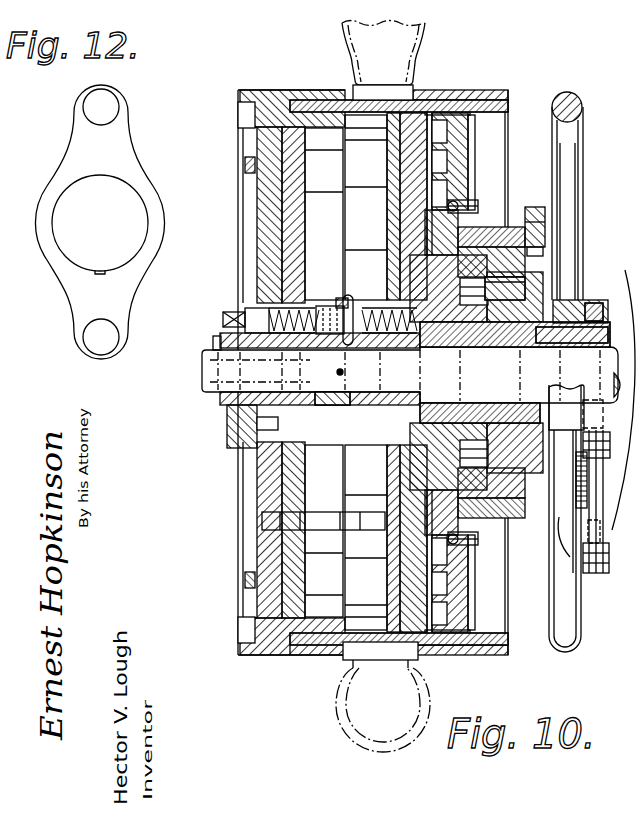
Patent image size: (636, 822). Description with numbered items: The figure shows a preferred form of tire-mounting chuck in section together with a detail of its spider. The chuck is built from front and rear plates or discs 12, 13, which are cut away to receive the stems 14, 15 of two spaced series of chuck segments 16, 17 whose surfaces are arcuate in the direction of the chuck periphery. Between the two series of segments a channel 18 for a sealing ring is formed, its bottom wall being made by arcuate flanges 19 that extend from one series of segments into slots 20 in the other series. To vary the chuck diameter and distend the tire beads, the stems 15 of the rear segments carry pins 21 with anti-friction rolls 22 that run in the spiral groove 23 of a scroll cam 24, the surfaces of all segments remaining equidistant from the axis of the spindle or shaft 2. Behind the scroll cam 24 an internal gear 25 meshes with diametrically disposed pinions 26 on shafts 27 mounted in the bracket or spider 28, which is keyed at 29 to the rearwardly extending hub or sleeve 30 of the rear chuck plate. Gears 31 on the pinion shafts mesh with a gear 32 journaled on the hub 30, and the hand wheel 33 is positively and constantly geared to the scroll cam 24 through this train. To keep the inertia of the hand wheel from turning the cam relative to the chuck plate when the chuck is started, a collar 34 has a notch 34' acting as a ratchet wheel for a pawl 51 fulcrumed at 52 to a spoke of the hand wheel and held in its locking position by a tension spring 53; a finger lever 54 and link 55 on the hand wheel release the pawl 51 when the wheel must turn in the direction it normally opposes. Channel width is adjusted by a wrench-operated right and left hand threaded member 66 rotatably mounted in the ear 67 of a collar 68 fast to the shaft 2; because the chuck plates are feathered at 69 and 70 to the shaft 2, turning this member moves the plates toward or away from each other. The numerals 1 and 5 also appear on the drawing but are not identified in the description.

In FIG. 10, the gear housing 1 is at (270, 657).
In FIG. 10, the spindle or shaft 2 is at (208, 368).
In FIG. 10, the shift lever pivot 5 is at (617, 280).
In FIG. 10, the front plate 12 is at (285, 216).
In FIG. 10, the rear plate 13 is at (393, 157).
In FIG. 10, the stems 14 is at (263, 250).
In FIG. 10, the stems 15 is at (408, 198).
In FIG. 10, the chuck segments 16 is at (240, 115).
In FIG. 10, the chuck segments 17 is at (498, 115).
In FIG. 10, the channel 18 is at (423, 92).
In FIG. 10, the arcuate flanges 19 is at (297, 653).
In FIG. 10, the slots 20 is at (305, 102).
In FIG. 10, the pins 21 is at (390, 247).
In FIG. 10, the anti-friction rolls 22 is at (443, 268).
In FIG. 10, the spiral groove 23 is at (438, 162).
In FIG. 10, the scroll cam 24 is at (455, 143).
In FIG. 10, the internal gear 25 is at (478, 210).
In FIG. 10, the pinions 26 is at (498, 222).
In FIG. 10, the shafts 27 is at (540, 230).
In FIG. 12, the bracket or spider 28 is at (128, 150).
In FIG. 10, the bracket or spider 28 is at (553, 260).
In FIG. 10, the key 29 is at (482, 402).
In FIG. 10, the hub or sleeve 30 is at (607, 332).
In FIG. 10, the gears 31 is at (533, 210).
In FIG. 10, the gear 32 is at (540, 295).
In FIG. 10, the hand wheel 33 is at (583, 108).
In FIG. 10, the collar 34 is at (610, 306).
In FIG. 10, the notch 34' is at (607, 414).
In FIG. 10, the pawl 51 is at (607, 472).
In FIG. 10, the fulcrum 52 is at (610, 445).
In FIG. 10, the tension spring 53 is at (587, 488).
In FIG. 10, the finger lever 54 is at (601, 532).
In FIG. 10, the link 55 is at (594, 517).
In FIG. 10, the right and left hand threaded member 66 is at (222, 320).
In FIG. 10, the ear 67 is at (347, 302).
In FIG. 10, the collar 68 is at (330, 405).
In FIG. 10, the feather 69 is at (215, 340).
In FIG. 10, the feather 70 is at (618, 382).